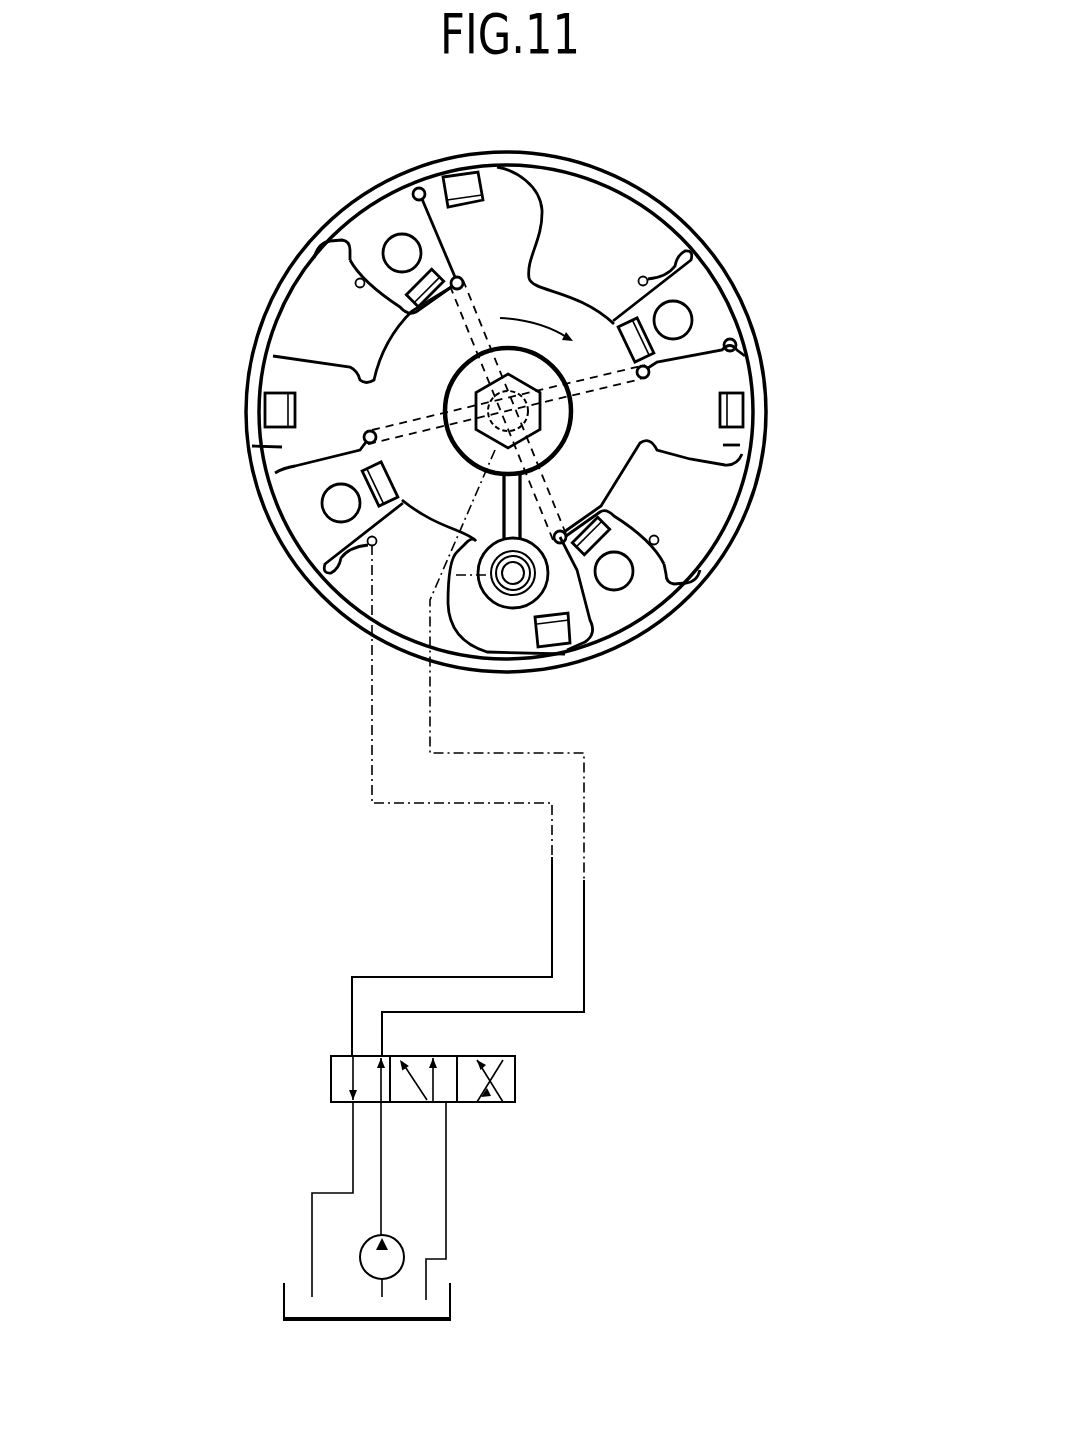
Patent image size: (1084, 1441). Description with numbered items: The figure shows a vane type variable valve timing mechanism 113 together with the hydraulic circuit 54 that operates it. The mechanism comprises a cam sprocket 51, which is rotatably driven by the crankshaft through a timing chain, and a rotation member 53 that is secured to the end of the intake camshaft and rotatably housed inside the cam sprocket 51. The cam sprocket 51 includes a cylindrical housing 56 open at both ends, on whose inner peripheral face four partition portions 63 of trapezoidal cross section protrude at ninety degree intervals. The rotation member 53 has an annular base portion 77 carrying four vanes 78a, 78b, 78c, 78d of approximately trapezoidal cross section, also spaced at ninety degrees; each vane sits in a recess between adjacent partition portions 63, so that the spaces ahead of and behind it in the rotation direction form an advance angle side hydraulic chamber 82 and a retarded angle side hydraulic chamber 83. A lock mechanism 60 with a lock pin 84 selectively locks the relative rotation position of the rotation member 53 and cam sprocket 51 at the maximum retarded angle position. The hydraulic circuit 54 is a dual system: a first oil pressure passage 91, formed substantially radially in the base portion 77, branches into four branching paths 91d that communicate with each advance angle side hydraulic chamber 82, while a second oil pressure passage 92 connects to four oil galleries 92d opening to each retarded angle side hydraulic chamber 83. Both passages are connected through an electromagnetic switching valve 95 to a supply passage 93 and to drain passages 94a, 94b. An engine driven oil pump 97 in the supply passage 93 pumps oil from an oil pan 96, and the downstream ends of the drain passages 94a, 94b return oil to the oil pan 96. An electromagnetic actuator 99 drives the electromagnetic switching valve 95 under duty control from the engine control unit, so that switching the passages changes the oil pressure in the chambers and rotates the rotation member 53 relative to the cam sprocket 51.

The variable valve timing mechanism 113 is at (800, 105).
The cam sprocket 51 is at (608, 165).
The rotation member 53 is at (652, 468).
The hydraulic circuit 54 is at (590, 945).
The housing 56 is at (627, 185).
The lock mechanism 60 is at (553, 590).
The partition portion 63 is at (378, 268).
The base portion 77 is at (433, 513).
The first vane 78a is at (282, 447).
The second vane 78b is at (528, 208).
The third vane 78c is at (740, 445).
The fourth vane 78d is at (467, 620).
The advance angle side hydraulic chamber 82 is at (428, 188).
The retarded angle side hydraulic chamber 83 is at (342, 315).
The lock pin 84 is at (508, 612).
The first oil pressure passage 91 is at (590, 846).
The branching path 91d is at (473, 333).
The second oil pressure passage 92 is at (550, 912).
The oil gallery 92d is at (356, 282).
The supply passage 93 is at (381, 1135).
The drain passage 94a is at (353, 1148).
The drain passage 94b is at (446, 1165).
The electromagnetic switching valve 95 is at (418, 1056).
The oil pan 96 is at (285, 1285).
The oil pump 97 is at (391, 1236).
The electromagnetic actuator 99 is at (497, 1057).